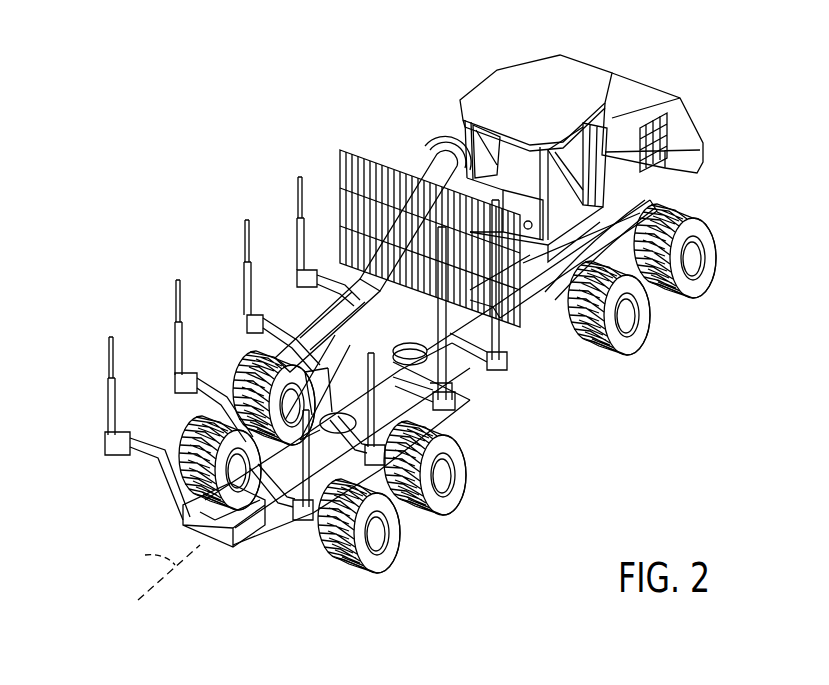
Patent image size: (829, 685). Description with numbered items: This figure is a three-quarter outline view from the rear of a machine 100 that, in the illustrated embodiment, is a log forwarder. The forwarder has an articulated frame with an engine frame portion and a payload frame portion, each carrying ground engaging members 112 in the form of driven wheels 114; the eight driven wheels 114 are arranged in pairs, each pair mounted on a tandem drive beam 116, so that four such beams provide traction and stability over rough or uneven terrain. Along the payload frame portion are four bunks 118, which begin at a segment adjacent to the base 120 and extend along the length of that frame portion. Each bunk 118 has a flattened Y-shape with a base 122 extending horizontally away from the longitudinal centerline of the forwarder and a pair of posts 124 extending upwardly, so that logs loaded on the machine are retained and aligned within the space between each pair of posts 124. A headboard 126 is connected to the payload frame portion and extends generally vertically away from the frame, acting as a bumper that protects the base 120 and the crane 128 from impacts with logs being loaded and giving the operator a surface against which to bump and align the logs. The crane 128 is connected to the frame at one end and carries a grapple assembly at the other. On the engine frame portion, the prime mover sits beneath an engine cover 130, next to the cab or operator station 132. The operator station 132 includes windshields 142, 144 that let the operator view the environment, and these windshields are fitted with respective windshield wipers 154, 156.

The machine 100 is at (712, 70).
The ground engaging members 112 is at (720, 214).
The driven wheels 114 is at (693, 287).
The tandem drive beam 116 is at (613, 250).
The bunks 118 is at (100, 350).
The base 120 is at (450, 363).
The base 122 is at (150, 455).
The posts 124 is at (107, 398).
The headboard 126 is at (363, 162).
The crane 128 is at (335, 247).
The engine cover 130 is at (640, 88).
The operator station 132 is at (540, 75).
The windshield 142 is at (478, 138).
The windshield 144 is at (545, 200).
The windshield wiper 154 is at (480, 140).
The windshield wiper 156 is at (577, 125).